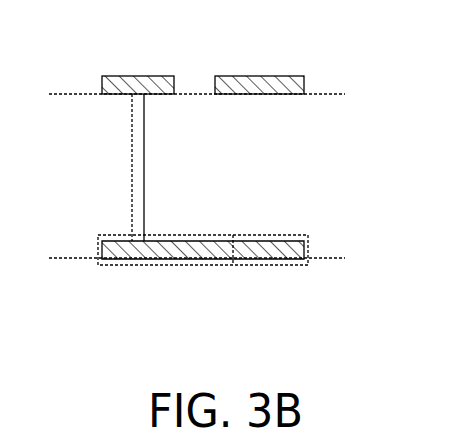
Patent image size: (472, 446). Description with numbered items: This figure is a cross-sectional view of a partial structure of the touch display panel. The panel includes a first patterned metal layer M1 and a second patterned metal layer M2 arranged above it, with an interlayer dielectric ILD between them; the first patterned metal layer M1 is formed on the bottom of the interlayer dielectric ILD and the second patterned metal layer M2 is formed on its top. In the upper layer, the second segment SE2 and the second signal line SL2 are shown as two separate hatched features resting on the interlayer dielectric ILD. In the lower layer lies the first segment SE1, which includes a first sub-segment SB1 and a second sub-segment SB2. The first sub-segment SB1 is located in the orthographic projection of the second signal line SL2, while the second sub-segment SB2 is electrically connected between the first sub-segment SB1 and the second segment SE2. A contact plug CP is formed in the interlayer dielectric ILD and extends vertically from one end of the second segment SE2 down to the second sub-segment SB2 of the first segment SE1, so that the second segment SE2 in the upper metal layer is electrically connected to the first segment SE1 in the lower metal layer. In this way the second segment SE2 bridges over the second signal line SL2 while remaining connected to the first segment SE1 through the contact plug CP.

The second patterned metal layer M2 is at (318, 80).
The first patterned metal layer M1 is at (320, 245).
The interlayer dielectric ILD is at (322, 169).
The second segment SE2 is at (134, 80).
The second signal line SL2 is at (253, 76).
The contact plug CP is at (138, 168).
The first segment SE1 is at (203, 299).
The second sub-segment SB2 is at (167, 262).
The first sub-segment SB1 is at (268, 279).